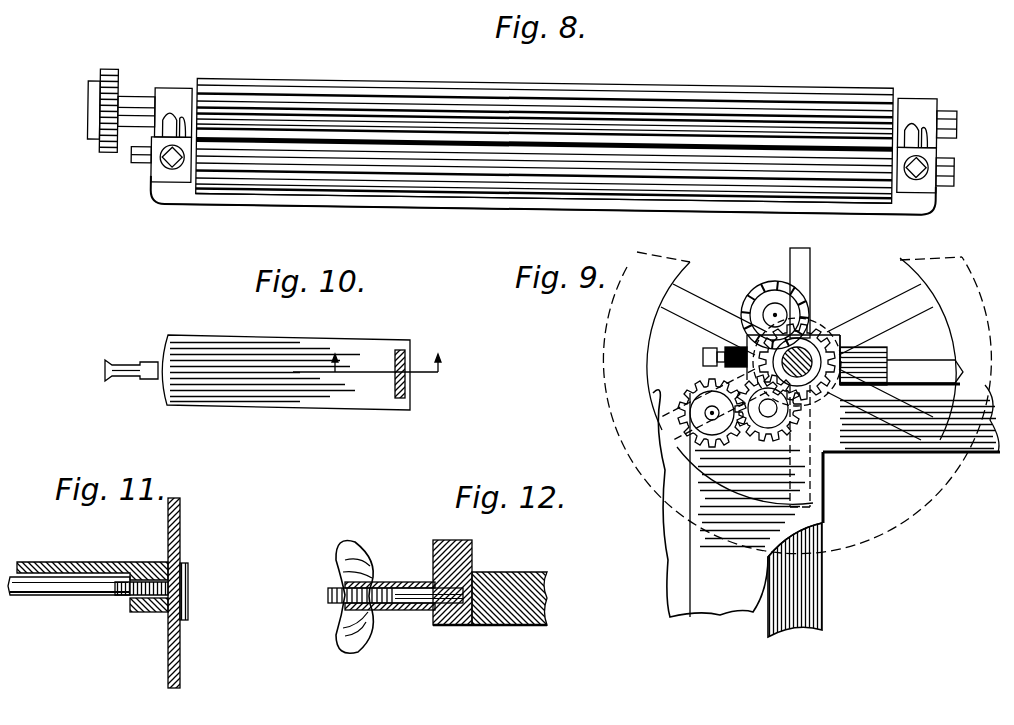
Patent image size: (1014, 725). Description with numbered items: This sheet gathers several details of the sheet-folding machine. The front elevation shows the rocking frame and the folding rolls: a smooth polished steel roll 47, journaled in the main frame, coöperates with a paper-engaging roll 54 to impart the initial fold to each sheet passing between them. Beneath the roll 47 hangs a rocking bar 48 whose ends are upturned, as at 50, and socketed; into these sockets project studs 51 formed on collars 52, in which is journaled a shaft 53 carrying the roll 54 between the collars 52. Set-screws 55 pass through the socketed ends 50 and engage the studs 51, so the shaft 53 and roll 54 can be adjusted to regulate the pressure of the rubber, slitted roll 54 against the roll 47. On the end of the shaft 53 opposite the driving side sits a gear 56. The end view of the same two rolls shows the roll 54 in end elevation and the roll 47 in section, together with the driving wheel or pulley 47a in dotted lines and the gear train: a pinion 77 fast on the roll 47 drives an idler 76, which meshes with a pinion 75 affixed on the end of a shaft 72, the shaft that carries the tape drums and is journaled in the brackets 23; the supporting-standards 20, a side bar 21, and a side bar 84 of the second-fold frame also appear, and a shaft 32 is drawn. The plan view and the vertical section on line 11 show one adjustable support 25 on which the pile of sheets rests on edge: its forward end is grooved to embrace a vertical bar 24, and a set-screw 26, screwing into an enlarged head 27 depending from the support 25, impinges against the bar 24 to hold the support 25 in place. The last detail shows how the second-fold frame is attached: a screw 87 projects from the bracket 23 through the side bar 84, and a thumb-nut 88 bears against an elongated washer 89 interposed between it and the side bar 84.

In FIG. 10, the section line 11 is at (380, 372).
In FIG. 9, the supporting-standards 20 is at (805, 596).
In FIG. 9, the side bars 21 is at (948, 440).
In FIG. 9, the brackets 23 is at (730, 600).
In FIG. 12, the brackets 23 is at (522, 586).
In FIG. 10, the vertical bars 24 is at (406, 386).
In FIG. 11, the vertical bars 24 is at (183, 532).
In FIG. 10, the horizontal supports 25 is at (378, 388).
In FIG. 11, the horizontal supports 25 is at (72, 562).
In FIG. 10, the set-screw 26 is at (145, 378).
In FIG. 11, the set-screw 26 is at (88, 586).
In FIG. 11, the enlarged head 27 is at (160, 613).
In FIG. 9, the shaft 32 is at (935, 362).
In FIG. 8, the roll 47 is at (475, 163).
In FIG. 9, the roll 47 is at (812, 372).
In FIG. 9, the driving wheel or pulley 47a is at (625, 326).
In FIG. 8, the rocking bar 48 is at (710, 204).
In FIG. 8, the upturned ends 50 is at (150, 172).
In FIG. 8, the studs 51 is at (170, 112).
In FIG. 8, the collars 52 is at (182, 88).
In FIG. 8, the shaft 53 is at (130, 97).
In FIG. 9, the shaft 53 is at (780, 316).
In FIG. 8, the paper-engaging roll 54 is at (300, 93).
In FIG. 9, the paper-engaging roll 54 is at (765, 292).
In FIG. 8, the set-screws 55 is at (170, 166).
In FIG. 9, the set-screws 55 is at (708, 350).
In FIG. 8, the gear 56 is at (110, 70).
In FIG. 9, the shaft 72 is at (706, 410).
In FIG. 9, the pinion 75 is at (714, 440).
In FIG. 9, the idler 76 is at (792, 414).
In FIG. 9, the pinion 77 is at (806, 350).
In FIG. 9, the side bars 84 is at (683, 592).
In FIG. 12, the side bars 84 is at (440, 545).
In FIG. 12, the screws 87 is at (328, 597).
In FIG. 12, the thumb-nuts 88 is at (348, 640).
In FIG. 12, the elongated washers 89 is at (394, 582).